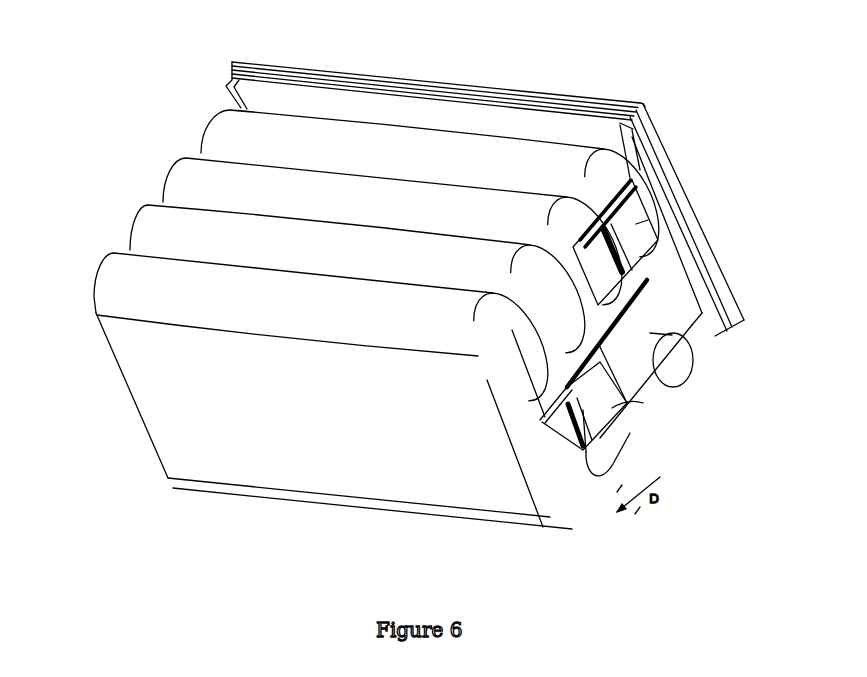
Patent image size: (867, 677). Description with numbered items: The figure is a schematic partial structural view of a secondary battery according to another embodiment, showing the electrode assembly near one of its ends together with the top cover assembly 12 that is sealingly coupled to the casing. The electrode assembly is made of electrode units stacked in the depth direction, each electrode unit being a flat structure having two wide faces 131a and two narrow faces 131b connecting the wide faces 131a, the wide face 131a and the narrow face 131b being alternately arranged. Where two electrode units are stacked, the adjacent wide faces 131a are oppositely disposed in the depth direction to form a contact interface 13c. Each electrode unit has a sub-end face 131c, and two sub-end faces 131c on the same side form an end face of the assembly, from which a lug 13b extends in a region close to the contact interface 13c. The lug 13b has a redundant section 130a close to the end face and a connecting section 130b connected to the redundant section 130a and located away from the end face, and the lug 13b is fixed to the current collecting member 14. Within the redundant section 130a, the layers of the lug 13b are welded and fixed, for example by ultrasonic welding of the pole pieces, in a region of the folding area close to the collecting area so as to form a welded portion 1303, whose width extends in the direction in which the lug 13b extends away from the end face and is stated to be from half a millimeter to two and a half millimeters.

The top cover assembly 12 is at (431, 110).
The lug 13b is at (668, 178).
The contact interface 13c is at (690, 266).
The welded portion 1303 is at (678, 238).
The current collecting member 14 is at (680, 323).
The redundant section 130a is at (612, 430).
The connecting section 130b is at (633, 430).
The wide face 131a is at (325, 437).
The narrow face 131b is at (135, 287).
The sub-end face 131c is at (603, 482).